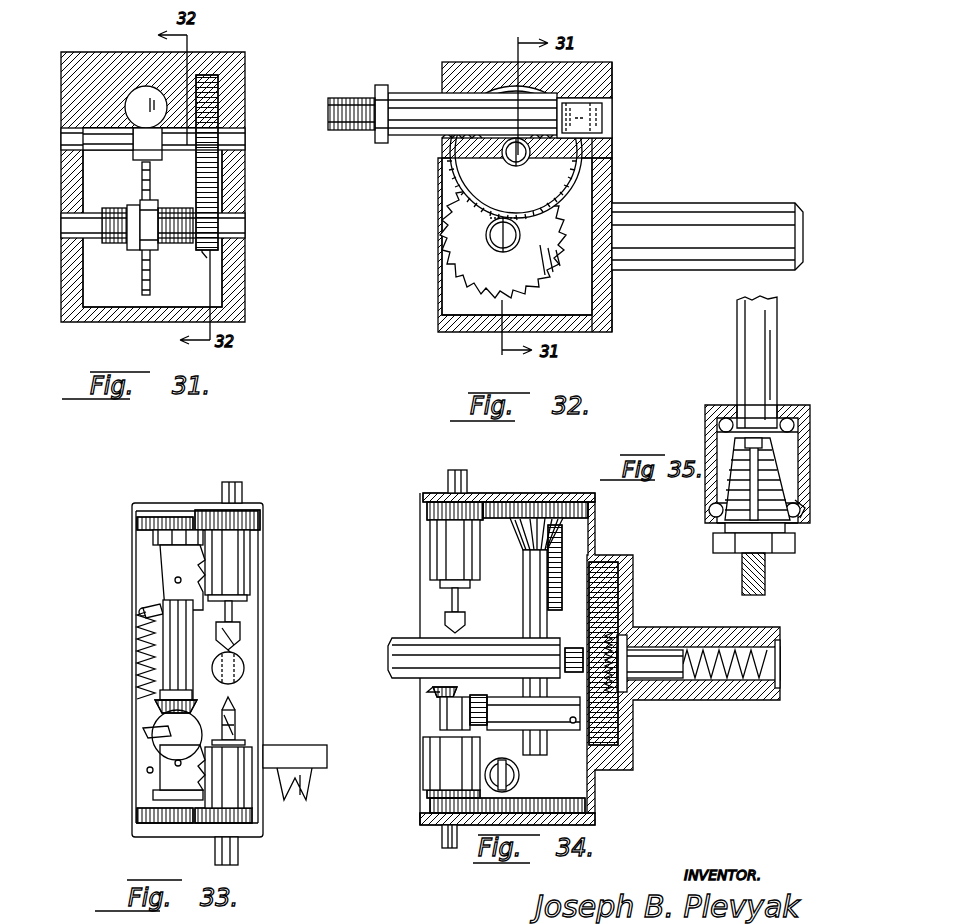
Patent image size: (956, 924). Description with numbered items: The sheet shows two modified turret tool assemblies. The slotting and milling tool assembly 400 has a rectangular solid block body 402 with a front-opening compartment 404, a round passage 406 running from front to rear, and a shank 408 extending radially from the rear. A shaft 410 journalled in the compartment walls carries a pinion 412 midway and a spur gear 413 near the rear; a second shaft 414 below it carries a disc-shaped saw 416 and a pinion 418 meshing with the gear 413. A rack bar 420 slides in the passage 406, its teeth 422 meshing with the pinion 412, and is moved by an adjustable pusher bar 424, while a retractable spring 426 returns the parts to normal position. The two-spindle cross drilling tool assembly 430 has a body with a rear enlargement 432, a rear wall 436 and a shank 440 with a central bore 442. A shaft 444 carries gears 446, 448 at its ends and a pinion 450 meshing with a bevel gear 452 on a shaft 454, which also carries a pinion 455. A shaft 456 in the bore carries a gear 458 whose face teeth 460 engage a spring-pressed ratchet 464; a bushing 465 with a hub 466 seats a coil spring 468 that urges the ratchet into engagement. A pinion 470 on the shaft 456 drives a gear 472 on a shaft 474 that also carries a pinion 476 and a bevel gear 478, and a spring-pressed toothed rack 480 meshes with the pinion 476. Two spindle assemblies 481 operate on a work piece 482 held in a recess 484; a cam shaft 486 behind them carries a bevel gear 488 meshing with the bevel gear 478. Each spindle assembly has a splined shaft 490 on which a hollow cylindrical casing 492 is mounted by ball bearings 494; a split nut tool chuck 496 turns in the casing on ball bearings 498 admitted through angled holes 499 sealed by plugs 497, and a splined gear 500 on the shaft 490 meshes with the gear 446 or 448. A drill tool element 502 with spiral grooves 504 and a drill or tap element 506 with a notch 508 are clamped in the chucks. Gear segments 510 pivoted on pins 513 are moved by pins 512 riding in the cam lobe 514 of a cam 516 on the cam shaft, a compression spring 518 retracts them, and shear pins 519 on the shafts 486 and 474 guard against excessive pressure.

In FIG. 31, the tool assembly 400 is at (250, 185).
In FIG. 32, the tool assembly 400 is at (620, 85).
In FIG. 31, the block body 402 is at (235, 278).
In FIG. 32, the block body 402 is at (468, 68).
In FIG. 31, the compartment 404 is at (110, 295).
In FIG. 32, the compartment 404 is at (450, 290).
In FIG. 31, the round passage 406 is at (90, 120).
In FIG. 32, the round passage 406 is at (600, 137).
In FIG. 32, the stem or shank 408 is at (728, 190).
In FIG. 31, the shaft 410 is at (118, 152).
In FIG. 32, the shaft 410 is at (500, 160).
In FIG. 31, the pinion 412 is at (152, 160).
In FIG. 32, the pinion 412 is at (518, 162).
In FIG. 31, the spur gear 413 is at (208, 75).
In FIG. 32, the spur gear 413 is at (610, 175).
In FIG. 31, the shaft 414 is at (163, 250).
In FIG. 32, the shaft 414 is at (500, 238).
In FIG. 31, the disc-shaped saw 416 is at (142, 272).
In FIG. 32, the disc-shaped saw 416 is at (465, 235).
In FIG. 31, the pinion 418 is at (203, 252).
In FIG. 32, the pinion 418 is at (518, 220).
In FIG. 32, the rack bar 420 is at (413, 92).
In FIG. 32, the teeth 422 is at (442, 150).
In FIG. 32, the adjustable pusher bar 424 is at (345, 92).
In FIG. 32, the retractable spring 426 is at (598, 100).
In FIG. 33, the tool assembly 430 is at (258, 595).
In FIG. 34, the tool assembly 430 is at (422, 528).
In FIG. 34, the enlargement 432 is at (628, 735).
In FIG. 34, the rear wall 436 is at (630, 600).
In FIG. 34, the shank 440 is at (680, 635).
In FIG. 34, the central bore 442 is at (720, 645).
In FIG. 34, the shaft 444 is at (523, 580).
In FIG. 33, the gear 446 is at (137, 523).
In FIG. 34, the gear 446 is at (495, 518).
In FIG. 33, the gear 448 is at (137, 815).
In FIG. 34, the gear 448 is at (480, 825).
In FIG. 34, the pinion 450 is at (512, 520).
In FIG. 34, the bevel gear 452 is at (562, 530).
In FIG. 34, the shaft 454 is at (615, 578).
In FIG. 34, the pinion 455 is at (612, 570).
In FIG. 34, the shaft 456 is at (690, 683).
In FIG. 34, the gear 458 is at (625, 752).
In FIG. 34, the teeth 460 is at (622, 692).
In FIG. 34, the spring-pressed ratchet 464 is at (640, 652).
In FIG. 34, the bushing 465 is at (778, 638).
In FIG. 34, the hub 466 is at (765, 690).
In FIG. 34, the coil spring 468 is at (740, 683).
In FIG. 34, the pinion 470 is at (578, 645).
In FIG. 34, the gear 472 is at (608, 772).
In FIG. 34, the shaft 474 is at (529, 776).
In FIG. 34, the pinion 476 is at (520, 680).
In FIG. 34, the bevel gear 478 is at (487, 750).
In FIG. 33, the spring-pressed toothed rack 480 is at (262, 750).
In FIG. 34, the spring-pressed toothed rack 480 is at (470, 765).
In FIG. 33, the spindle assemblies 481 is at (252, 553).
In FIG. 33, the work piece 482 is at (244, 668).
In FIG. 34, the work piece 482 is at (392, 658).
In FIG. 34, the recess 484 is at (428, 640).
In FIG. 33, the cam shaft 486 is at (165, 652).
In FIG. 33, the bevel gear 488 is at (165, 727).
In FIG. 34, the bevel gear 488 is at (440, 695).
In FIG. 35, the splined shaft 490 is at (740, 335).
In FIG. 33, the splined shaft 490 is at (222, 488).
In FIG. 34, the splined shaft 490 is at (450, 485).
In FIG. 35, the hollow cylindrical casing 492 is at (705, 417).
In FIG. 33, the hollow cylindrical casing 492 is at (245, 545).
In FIG. 34, the hollow cylindrical casing 492 is at (445, 548).
In FIG. 35, the ball bearings 494 is at (787, 420).
In FIG. 35, the split nut tool chuck 496 is at (737, 460).
In FIG. 35, the plugs 497 is at (795, 520).
In FIG. 35, the ball bearings 498 is at (710, 515).
In FIG. 35, the holes 499 is at (805, 508).
In FIG. 33, the splined gear 500 is at (253, 522).
In FIG. 34, the splined gear 500 is at (427, 520).
In FIG. 35, the drill tool element 502 is at (765, 583).
In FIG. 33, the drill tool element 502 is at (230, 700).
In FIG. 34, the drill tool element 502 is at (440, 703).
In FIG. 33, the spiral grooves 504 is at (236, 715).
In FIG. 34, the spiral grooves 504 is at (445, 715).
In FIG. 33, the drill or tap tool element 506 is at (238, 625).
In FIG. 34, the drill or tap tool element 506 is at (445, 618).
In FIG. 33, the notch 508 is at (240, 652).
In FIG. 33, the gear segments 510 is at (178, 552).
In FIG. 33, the pins 512 is at (175, 583).
In FIG. 33, the pins 513 is at (150, 610).
In FIG. 33, the cam lobe 514 is at (170, 578).
In FIG. 33, the cam 516 is at (160, 612).
In FIG. 33, the compression spring 518 is at (160, 686).
In FIG. 33, the shear pins 519 is at (165, 703).
In FIG. 34, the shear pins 519 is at (573, 723).